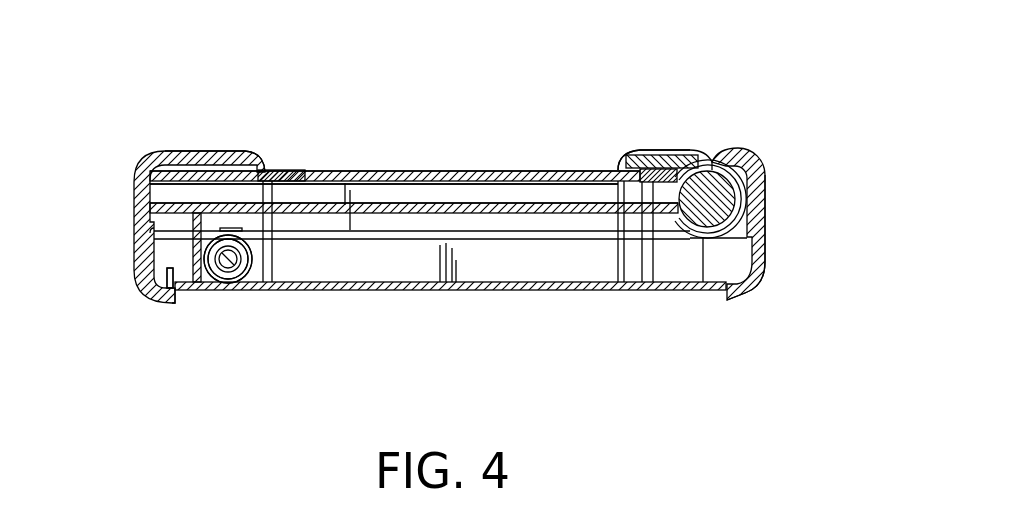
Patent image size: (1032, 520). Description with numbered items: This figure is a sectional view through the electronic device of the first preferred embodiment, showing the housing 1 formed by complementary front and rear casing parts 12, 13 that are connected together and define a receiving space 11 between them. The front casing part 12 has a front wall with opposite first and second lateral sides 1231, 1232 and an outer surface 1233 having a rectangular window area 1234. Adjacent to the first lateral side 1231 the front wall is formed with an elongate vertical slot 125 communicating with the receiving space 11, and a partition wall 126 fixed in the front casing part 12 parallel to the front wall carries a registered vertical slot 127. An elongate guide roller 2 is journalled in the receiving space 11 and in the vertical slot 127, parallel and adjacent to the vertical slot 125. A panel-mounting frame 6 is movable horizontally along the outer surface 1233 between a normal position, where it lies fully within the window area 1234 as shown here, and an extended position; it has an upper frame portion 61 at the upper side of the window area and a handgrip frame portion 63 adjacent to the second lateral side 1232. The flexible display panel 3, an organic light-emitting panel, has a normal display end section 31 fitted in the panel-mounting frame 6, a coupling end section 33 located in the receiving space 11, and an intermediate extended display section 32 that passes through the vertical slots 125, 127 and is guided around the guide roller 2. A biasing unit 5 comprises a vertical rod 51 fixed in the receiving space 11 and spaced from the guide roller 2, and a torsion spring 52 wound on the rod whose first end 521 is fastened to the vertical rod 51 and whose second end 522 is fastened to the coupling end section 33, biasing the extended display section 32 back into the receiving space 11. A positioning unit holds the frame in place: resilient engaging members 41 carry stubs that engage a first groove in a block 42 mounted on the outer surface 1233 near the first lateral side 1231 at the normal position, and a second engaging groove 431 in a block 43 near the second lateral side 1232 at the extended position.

The housing 1 is at (870, 168).
The front casing part 12 is at (776, 180).
The rear casing part 13 is at (776, 288).
The guide roller 2 is at (745, 150).
The flexible display panel 3 is at (553, 160).
The normal display end section 31 is at (511, 170).
The intermediate extended display section 32 is at (707, 240).
The coupling end section 33 is at (383, 240).
The biasing unit 5 is at (215, 397).
The vertical rod 51 is at (204, 302).
The torsion spring 52 is at (231, 284).
The first end 521 is at (255, 278).
The second end 522 is at (193, 216).
The panel-mounting frame 6 is at (137, 135).
The upper frame portion 61 is at (607, 166).
The handgrip frame portion 63 is at (190, 151).
The resilient engaging member 41 is at (651, 168).
The block 42 is at (696, 150).
The block 43 is at (262, 168).
The second engaging groove 431 is at (288, 170).
The receiving space 11 is at (552, 258).
The vertical slot 125 is at (705, 195).
The partition wall 126 is at (148, 191).
The vertical slot 127 is at (672, 218).
The first lateral side 1231 is at (724, 162).
The second lateral side 1232 is at (148, 177).
The outer surface 1233 is at (358, 178).
The window area 1234 is at (358, 178).